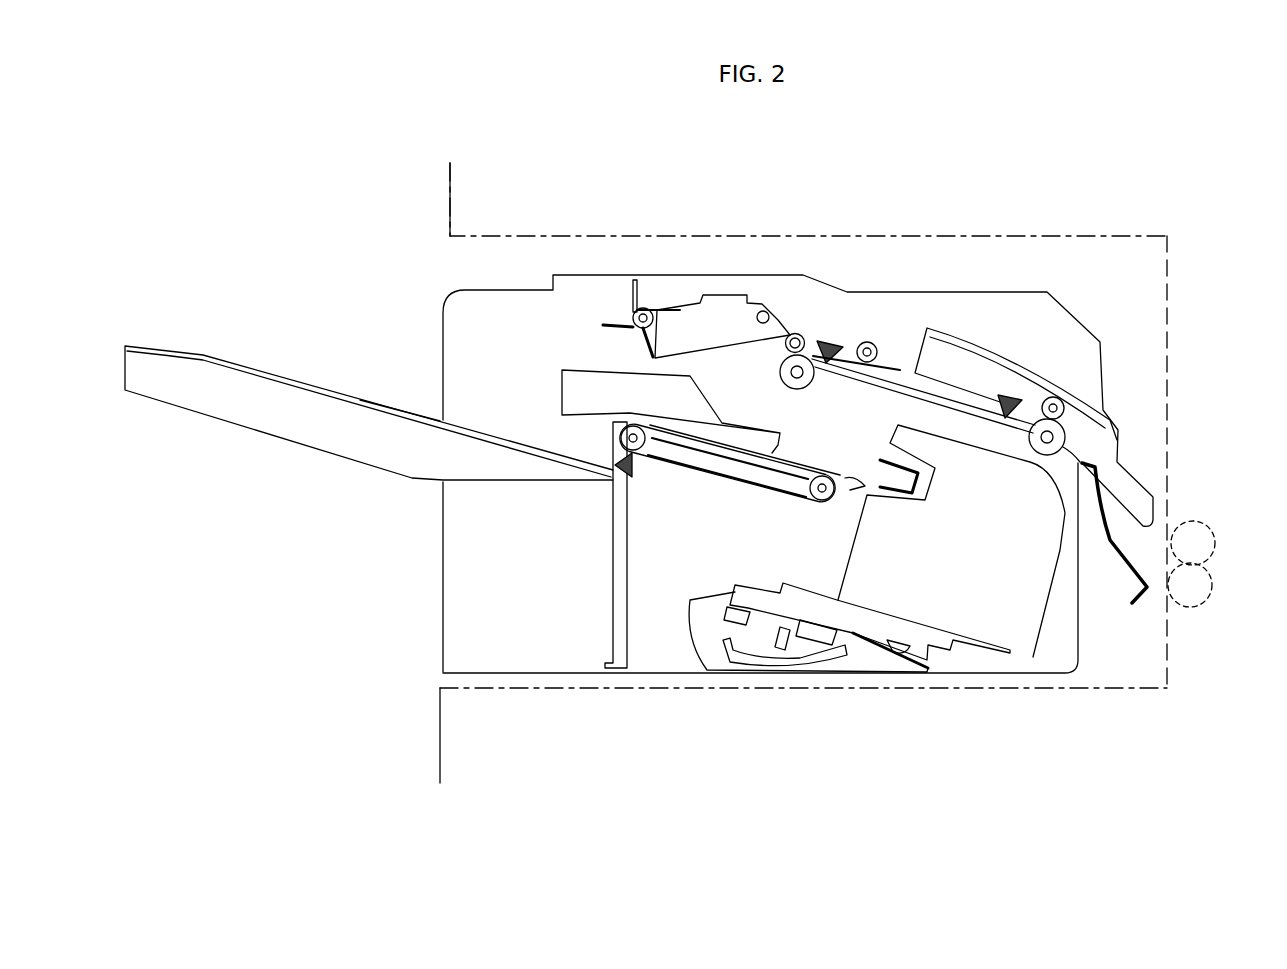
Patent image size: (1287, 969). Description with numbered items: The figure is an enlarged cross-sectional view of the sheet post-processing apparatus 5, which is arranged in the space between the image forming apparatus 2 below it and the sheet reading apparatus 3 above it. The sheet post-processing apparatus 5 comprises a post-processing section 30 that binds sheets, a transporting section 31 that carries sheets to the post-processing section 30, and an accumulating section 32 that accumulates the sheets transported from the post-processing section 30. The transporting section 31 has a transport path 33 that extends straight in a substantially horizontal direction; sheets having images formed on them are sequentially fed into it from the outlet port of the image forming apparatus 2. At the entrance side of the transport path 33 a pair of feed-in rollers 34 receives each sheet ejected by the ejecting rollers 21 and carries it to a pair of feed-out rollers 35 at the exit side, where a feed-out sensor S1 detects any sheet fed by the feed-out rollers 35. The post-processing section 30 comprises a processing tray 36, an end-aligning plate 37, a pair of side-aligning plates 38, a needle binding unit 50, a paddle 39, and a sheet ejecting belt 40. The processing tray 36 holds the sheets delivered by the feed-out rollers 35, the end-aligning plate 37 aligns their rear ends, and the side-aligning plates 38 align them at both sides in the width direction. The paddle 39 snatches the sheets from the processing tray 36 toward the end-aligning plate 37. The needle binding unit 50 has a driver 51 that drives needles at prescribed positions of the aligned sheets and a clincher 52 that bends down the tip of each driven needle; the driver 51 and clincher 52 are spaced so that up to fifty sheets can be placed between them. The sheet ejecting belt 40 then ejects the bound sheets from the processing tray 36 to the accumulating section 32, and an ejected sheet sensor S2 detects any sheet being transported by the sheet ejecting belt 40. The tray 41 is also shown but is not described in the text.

The image forming apparatus 2 is at (440, 725).
The sheet reading apparatus 3 is at (450, 185).
The sheet post-processing apparatus 5 is at (1027, 267).
The ejecting rollers 21 is at (1200, 523).
The post-processing section 30 is at (783, 527).
The transporting section 31 is at (890, 353).
The accumulating section 32 is at (403, 377).
The transport path 33 is at (958, 397).
The pair of feed-in rollers 34 is at (1054, 397).
The pair of feed-out rollers 35 is at (798, 334).
The processing tray 36 is at (805, 457).
The end-aligning plate 37 is at (897, 478).
The side-aligning plates 38 is at (567, 392).
The paddle 39 is at (640, 290).
The sheet ejecting belt 40 is at (670, 467).
The sheet tray 41 is at (202, 363).
The needle binding unit 50 is at (990, 640).
The driver 51 is at (832, 503).
The clincher 52 is at (923, 394).
The feed-out sensor S1 is at (830, 342).
The ejected sheet sensor S2 is at (613, 495).